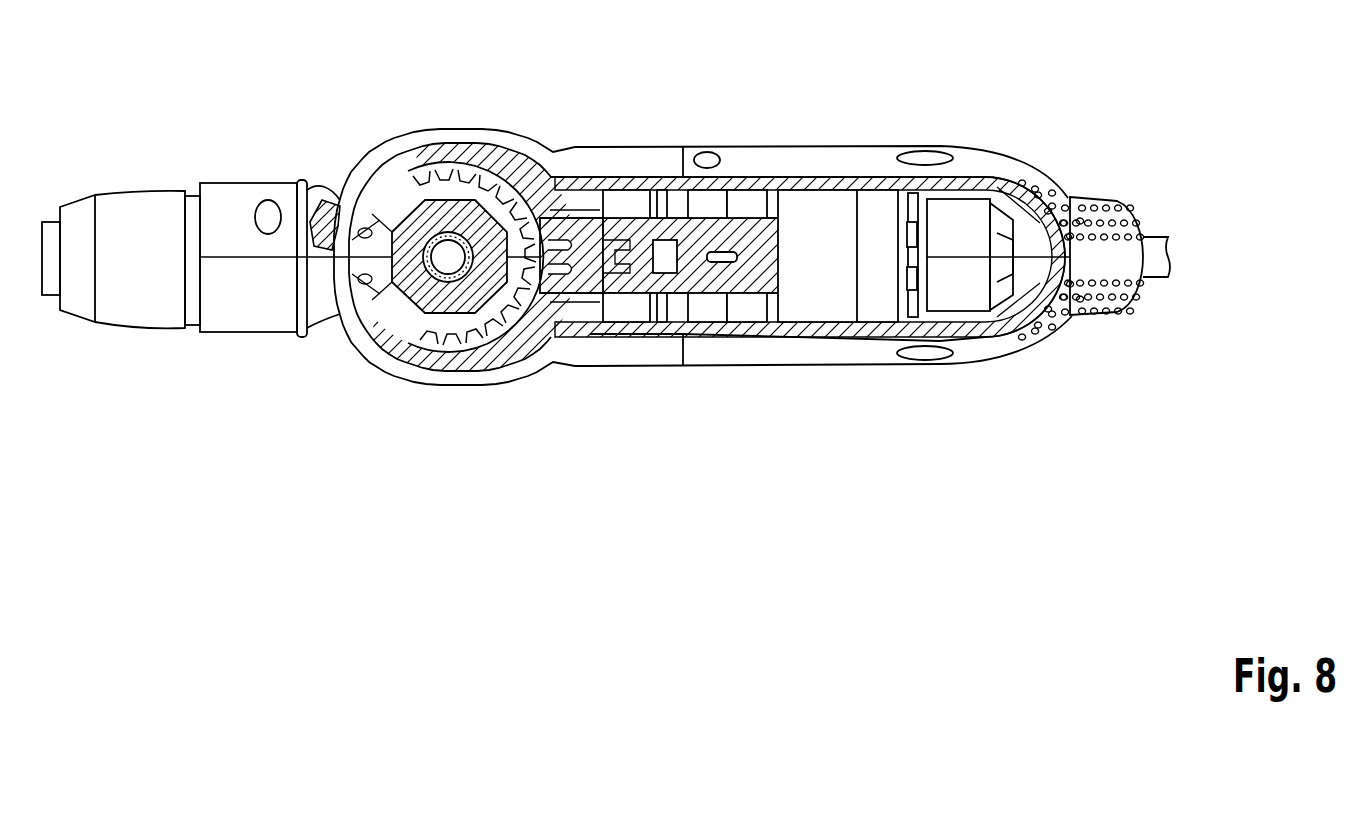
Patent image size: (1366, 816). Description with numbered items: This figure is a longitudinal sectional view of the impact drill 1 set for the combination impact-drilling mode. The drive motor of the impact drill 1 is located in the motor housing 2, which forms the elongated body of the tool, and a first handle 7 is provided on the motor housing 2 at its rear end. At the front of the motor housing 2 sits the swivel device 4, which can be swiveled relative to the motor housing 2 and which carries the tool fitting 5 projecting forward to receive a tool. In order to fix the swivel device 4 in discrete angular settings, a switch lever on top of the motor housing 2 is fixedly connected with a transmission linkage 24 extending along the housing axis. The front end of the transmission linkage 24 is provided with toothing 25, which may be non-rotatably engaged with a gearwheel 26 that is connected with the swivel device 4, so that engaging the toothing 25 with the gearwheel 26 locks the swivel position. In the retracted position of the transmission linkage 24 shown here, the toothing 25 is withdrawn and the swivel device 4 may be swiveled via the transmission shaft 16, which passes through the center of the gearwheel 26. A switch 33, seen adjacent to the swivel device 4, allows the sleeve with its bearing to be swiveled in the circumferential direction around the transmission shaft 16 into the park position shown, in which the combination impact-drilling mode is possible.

The impact drill 1 is at (813, 383).
The motor housing 2 is at (872, 147).
The swivel device 4 is at (257, 318).
The tool fitting 5 is at (132, 194).
The first handle 7 is at (1095, 197).
The transmission shaft 16 is at (447, 255).
The transmission linkage 24 is at (700, 283).
The toothing 25 is at (553, 283).
The gearwheel 26 is at (405, 327).
The switch 33 is at (330, 197).